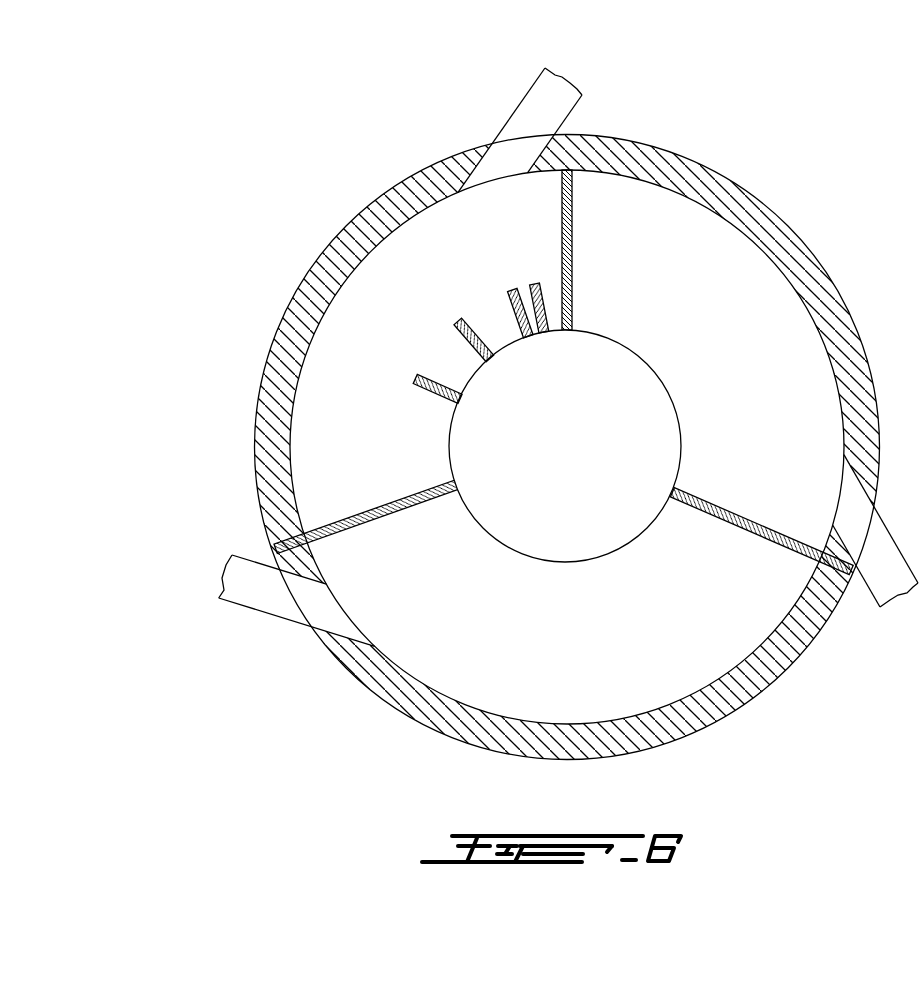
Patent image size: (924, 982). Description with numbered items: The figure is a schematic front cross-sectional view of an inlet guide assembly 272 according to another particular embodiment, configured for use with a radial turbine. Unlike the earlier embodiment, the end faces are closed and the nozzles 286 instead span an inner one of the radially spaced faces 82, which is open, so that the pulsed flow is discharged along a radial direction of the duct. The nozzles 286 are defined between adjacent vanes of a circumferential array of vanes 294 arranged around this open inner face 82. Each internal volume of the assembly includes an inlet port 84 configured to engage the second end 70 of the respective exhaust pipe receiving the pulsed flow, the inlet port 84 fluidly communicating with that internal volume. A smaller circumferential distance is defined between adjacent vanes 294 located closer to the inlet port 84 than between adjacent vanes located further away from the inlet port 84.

The inlet guide assembly 272 is at (209, 194).
The second end 70 is at (242, 577).
The inlet port 84 is at (315, 600).
The radially spaced face 82 is at (535, 558).
The nozzles 286 is at (465, 367).
The vanes 294 is at (460, 398).